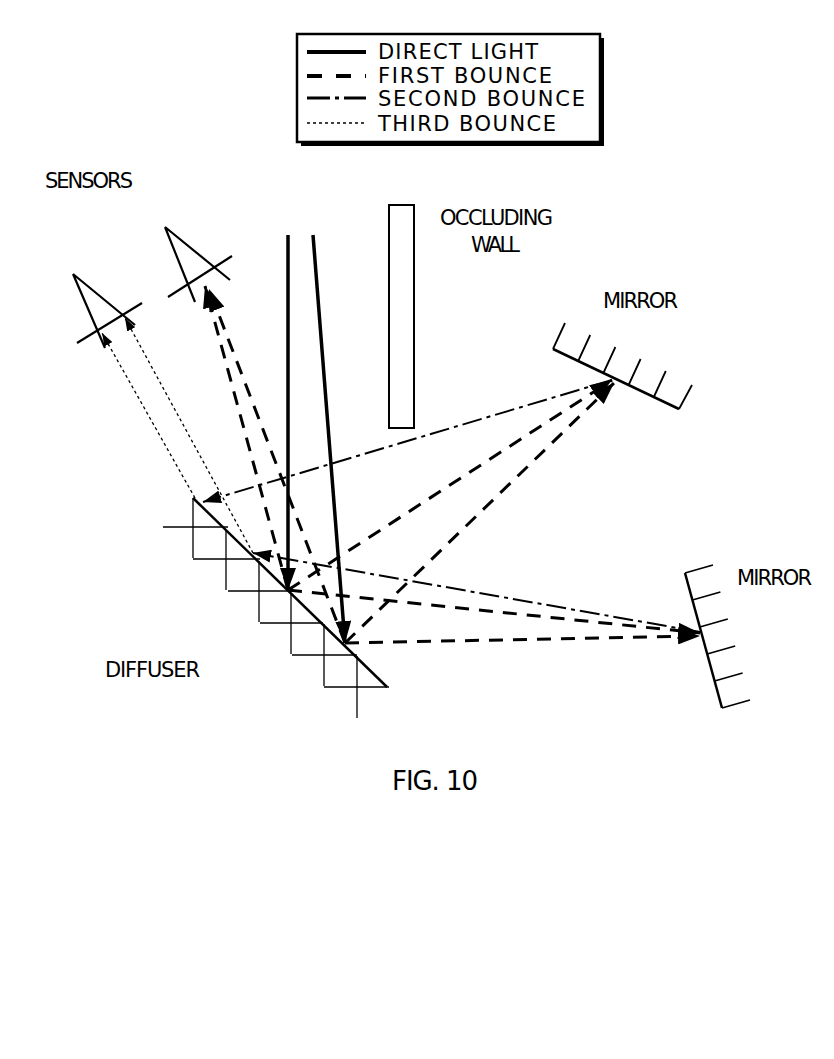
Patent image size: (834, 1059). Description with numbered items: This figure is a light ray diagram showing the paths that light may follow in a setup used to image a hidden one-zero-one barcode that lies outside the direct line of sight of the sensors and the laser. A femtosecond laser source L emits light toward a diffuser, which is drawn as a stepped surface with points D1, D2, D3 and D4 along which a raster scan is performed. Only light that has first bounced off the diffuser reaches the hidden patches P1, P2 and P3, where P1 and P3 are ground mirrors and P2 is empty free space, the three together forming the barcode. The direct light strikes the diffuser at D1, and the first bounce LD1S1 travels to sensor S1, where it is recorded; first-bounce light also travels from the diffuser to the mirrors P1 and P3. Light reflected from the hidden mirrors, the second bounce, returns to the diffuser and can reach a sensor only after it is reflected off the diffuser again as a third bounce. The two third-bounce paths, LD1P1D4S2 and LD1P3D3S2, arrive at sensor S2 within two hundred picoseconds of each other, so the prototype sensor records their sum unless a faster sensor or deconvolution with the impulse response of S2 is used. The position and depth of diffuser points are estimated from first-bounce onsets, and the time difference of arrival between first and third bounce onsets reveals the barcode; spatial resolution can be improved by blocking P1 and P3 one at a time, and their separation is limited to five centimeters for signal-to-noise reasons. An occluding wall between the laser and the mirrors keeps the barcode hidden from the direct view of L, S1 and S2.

The femtosecond laser source L is at (316, 418).
The sensor S1 is at (181, 249).
The sensor S2 is at (92, 294).
The mirror P1 is at (622, 366).
The empty space P2 is at (751, 490).
The mirror P3 is at (732, 636).
The diffuser point D1 is at (338, 687).
The diffuser point D2 is at (299, 655).
The diffuser point D3 is at (259, 607).
The diffuser point D4 is at (204, 544).